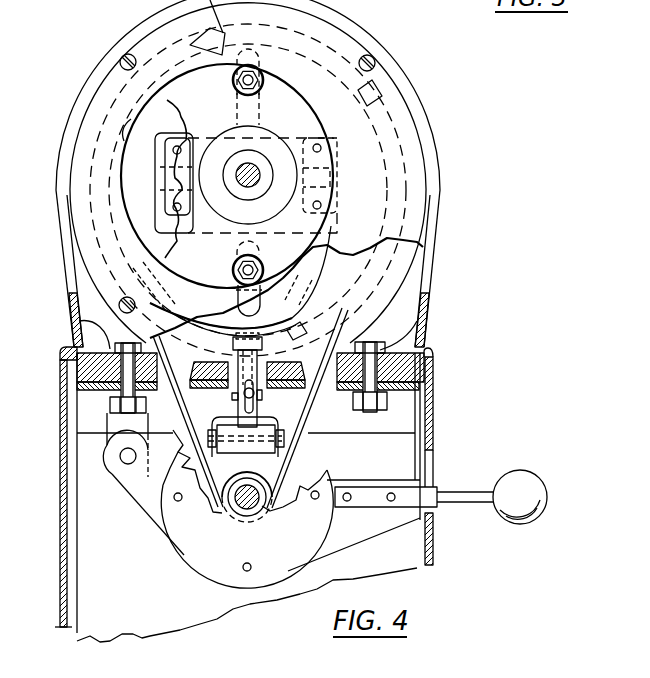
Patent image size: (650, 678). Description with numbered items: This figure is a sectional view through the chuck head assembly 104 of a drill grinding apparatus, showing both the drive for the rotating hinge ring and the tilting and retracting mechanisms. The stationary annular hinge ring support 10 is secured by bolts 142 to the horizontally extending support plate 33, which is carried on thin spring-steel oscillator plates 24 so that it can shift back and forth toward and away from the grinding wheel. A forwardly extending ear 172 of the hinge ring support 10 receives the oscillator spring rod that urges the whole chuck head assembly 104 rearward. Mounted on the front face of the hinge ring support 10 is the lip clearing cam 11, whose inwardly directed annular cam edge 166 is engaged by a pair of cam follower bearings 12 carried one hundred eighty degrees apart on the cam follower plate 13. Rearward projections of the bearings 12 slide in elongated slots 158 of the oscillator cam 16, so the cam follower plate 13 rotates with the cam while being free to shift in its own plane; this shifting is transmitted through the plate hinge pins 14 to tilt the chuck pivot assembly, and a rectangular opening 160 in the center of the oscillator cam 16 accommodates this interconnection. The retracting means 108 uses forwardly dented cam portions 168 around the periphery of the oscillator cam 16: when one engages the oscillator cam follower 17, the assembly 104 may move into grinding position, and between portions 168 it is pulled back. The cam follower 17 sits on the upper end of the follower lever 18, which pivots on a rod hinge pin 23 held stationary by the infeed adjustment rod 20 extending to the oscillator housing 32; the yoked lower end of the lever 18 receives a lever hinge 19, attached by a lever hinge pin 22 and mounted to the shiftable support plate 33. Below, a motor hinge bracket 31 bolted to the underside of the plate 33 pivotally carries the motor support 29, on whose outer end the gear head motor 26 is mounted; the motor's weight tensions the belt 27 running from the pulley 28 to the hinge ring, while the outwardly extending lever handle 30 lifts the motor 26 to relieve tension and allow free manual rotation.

The hinge ring support 10 is at (131, 37).
The lip clearing cam 11 is at (88, 278).
The cam follower bearings 12 is at (233, 84).
The cam follower plate 13 is at (177, 119).
The plate hinge pins 14 is at (163, 193).
The oscillator cam 16 is at (393, 263).
The oscillator cam follower 17 is at (233, 347).
The follower lever 18 is at (230, 415).
The lever hinge 19 is at (277, 460).
The infeed adjustment rod 20 is at (257, 380).
The lever hinge pin 22 is at (284, 445).
The rod hinge pin 23 is at (260, 397).
The oscillator plates 24 is at (153, 634).
The gear head motor 26 is at (165, 523).
The belt 27 is at (213, 498).
The pulley 28 is at (258, 507).
The motor support 29 is at (137, 500).
The lever handle 30 is at (517, 468).
The motor hinge plate or bracket 31 is at (107, 437).
The oscillator housing 32 is at (434, 356).
The support plate 33 is at (419, 387).
The chuck head assembly 104 is at (432, 111).
The retracting means 108 is at (318, 413).
The bolts 142 is at (71, 324).
The elongated slots 158 is at (262, 110).
The rectangular opening 160 is at (157, 157).
The annular cam edge 166 is at (128, 138).
The cam portions 168 is at (316, 313).
The ear 172 is at (411, 336).